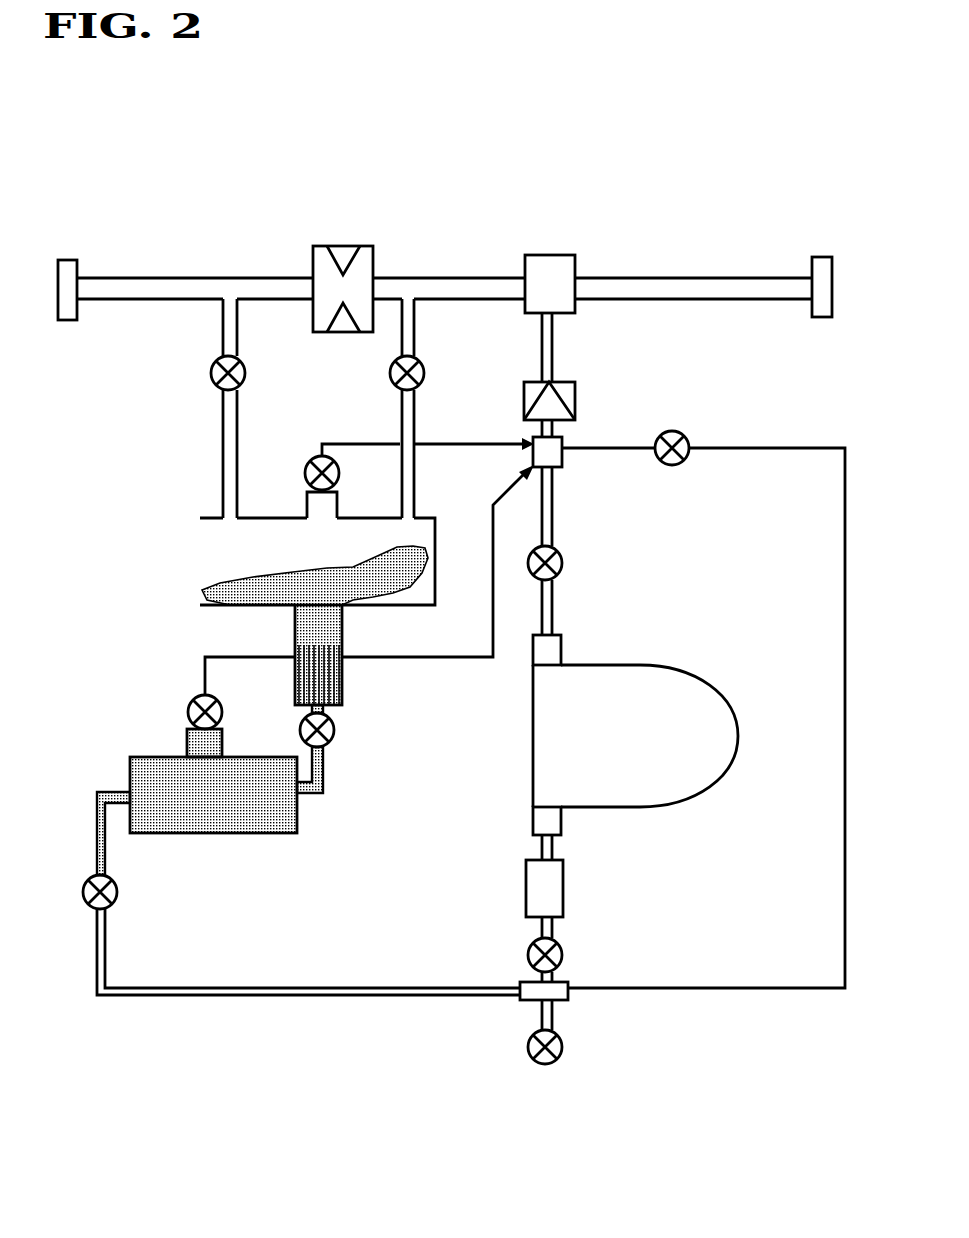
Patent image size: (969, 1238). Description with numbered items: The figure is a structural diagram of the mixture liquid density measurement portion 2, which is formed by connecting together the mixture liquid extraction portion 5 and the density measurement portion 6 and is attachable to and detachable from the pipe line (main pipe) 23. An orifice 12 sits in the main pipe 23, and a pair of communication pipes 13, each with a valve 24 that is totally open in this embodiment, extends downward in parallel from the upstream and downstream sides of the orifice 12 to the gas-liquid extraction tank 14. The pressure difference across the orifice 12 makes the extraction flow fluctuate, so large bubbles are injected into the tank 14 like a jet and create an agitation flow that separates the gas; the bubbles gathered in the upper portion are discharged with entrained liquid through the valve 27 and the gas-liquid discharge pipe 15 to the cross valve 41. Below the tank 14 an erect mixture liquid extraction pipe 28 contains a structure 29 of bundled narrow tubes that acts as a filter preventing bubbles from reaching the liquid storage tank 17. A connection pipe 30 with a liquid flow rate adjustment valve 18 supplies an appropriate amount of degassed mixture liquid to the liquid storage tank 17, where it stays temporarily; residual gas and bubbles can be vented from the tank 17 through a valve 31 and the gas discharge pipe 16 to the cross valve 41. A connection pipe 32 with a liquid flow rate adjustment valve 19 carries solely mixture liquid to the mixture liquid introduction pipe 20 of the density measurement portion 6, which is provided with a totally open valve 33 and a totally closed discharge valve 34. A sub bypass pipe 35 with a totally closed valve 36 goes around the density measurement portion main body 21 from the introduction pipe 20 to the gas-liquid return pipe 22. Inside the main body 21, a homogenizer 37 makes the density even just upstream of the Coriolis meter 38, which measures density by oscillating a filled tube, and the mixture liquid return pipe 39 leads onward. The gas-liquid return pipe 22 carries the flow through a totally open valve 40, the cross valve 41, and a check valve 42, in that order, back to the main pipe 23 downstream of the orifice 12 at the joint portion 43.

The mixture liquid density measurement portion 2 is at (480, 205).
The mixture liquid extraction portion 5 is at (132, 480).
The density measurement portion 6 is at (795, 430).
The orifice 12 is at (358, 246).
The communication pipes 13 is at (223, 428).
The gas-liquid extraction tank 14 is at (200, 554).
The gas-liquid discharge pipe 15 is at (358, 444).
The gas discharge pipe 16 is at (453, 657).
The liquid storage tank 17 is at (250, 834).
The liquid flow rate adjustment valve 18 is at (334, 732).
The liquid flow rate adjustment valve 19 is at (117, 892).
The mixture liquid introduction pipe 20 is at (570, 968).
The density measurement portion main body 21 is at (610, 852).
The gas-liquid return pipe 22 is at (580, 429).
The pipe line (main pipe) 23 is at (122, 278).
The valve 24 is at (211, 373).
The valve 27 is at (305, 474).
The mixture liquid extraction pipe 28 is at (343, 634).
The structure 29 is at (335, 684).
The connection pipe 30 is at (324, 770).
The valve 31 is at (186, 710).
The connection pipe 32 is at (292, 988).
The valve 33 is at (528, 954).
The discharge valve 34 is at (562, 1047).
The sub bypass pipe 35 is at (845, 822).
The valve 36 is at (672, 465).
The homogenizer 37 is at (563, 893).
The Coriolis meter 38 is at (672, 666).
The mixture liquid return pipe 39 is at (552, 600).
The valve 40 is at (562, 563).
The cross valve 41 is at (562, 467).
The check valve 42 is at (564, 380).
The joint portion 43 is at (558, 254).